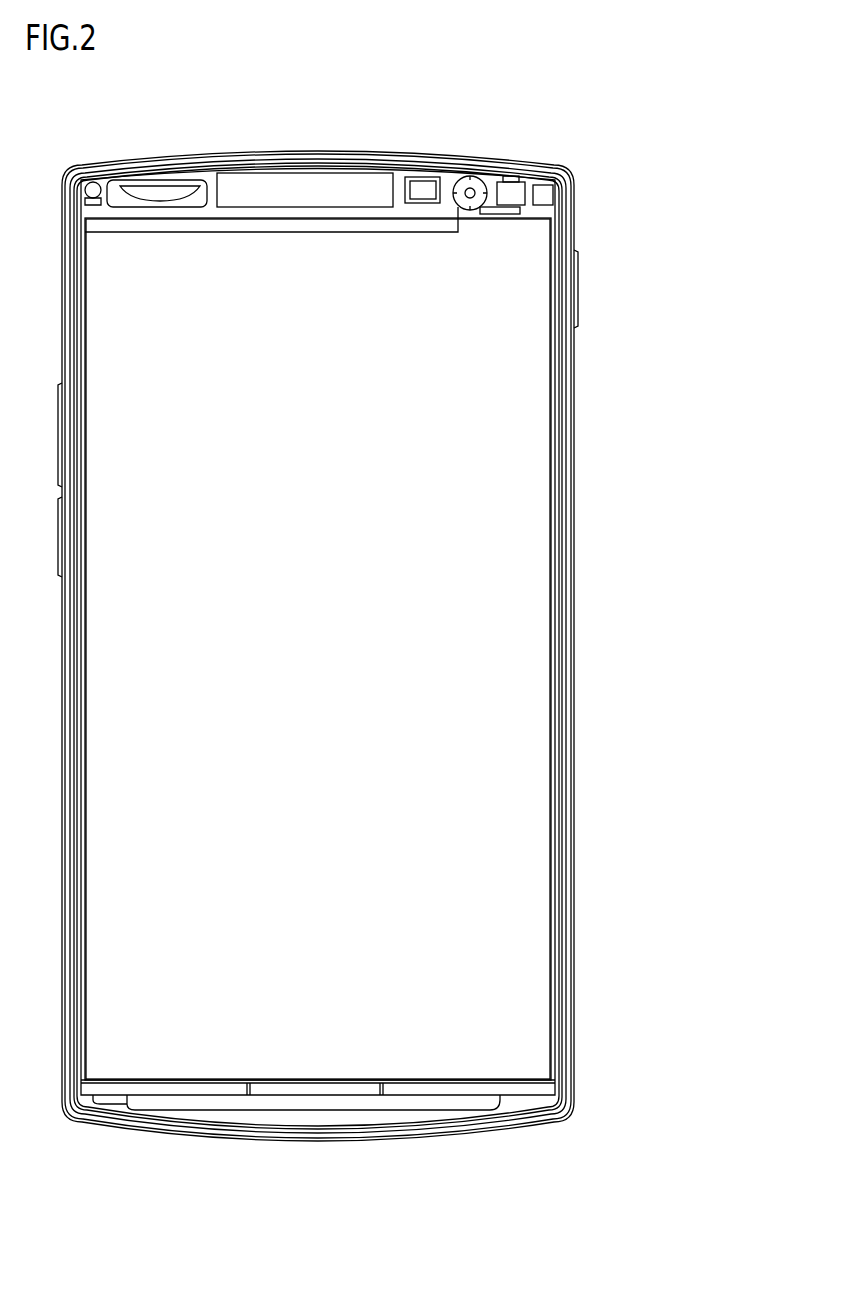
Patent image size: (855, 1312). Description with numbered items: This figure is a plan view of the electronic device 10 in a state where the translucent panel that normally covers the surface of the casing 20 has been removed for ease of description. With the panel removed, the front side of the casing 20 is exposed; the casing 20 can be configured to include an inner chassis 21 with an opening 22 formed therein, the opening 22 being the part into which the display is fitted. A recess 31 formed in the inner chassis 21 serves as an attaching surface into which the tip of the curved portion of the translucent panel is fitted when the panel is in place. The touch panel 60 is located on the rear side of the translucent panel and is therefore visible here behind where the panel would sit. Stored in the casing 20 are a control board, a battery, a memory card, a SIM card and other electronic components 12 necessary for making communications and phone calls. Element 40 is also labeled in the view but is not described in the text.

The electronic device 10 is at (556, 133).
The electronic components 12 is at (470, 190).
The casing 20 is at (569, 243).
The inner chassis 21 is at (392, 646).
The opening 22 is at (560, 463).
The recess 31 is at (565, 642).
The display panel 40 is at (462, 873).
The touch panel 60 is at (447, 732).